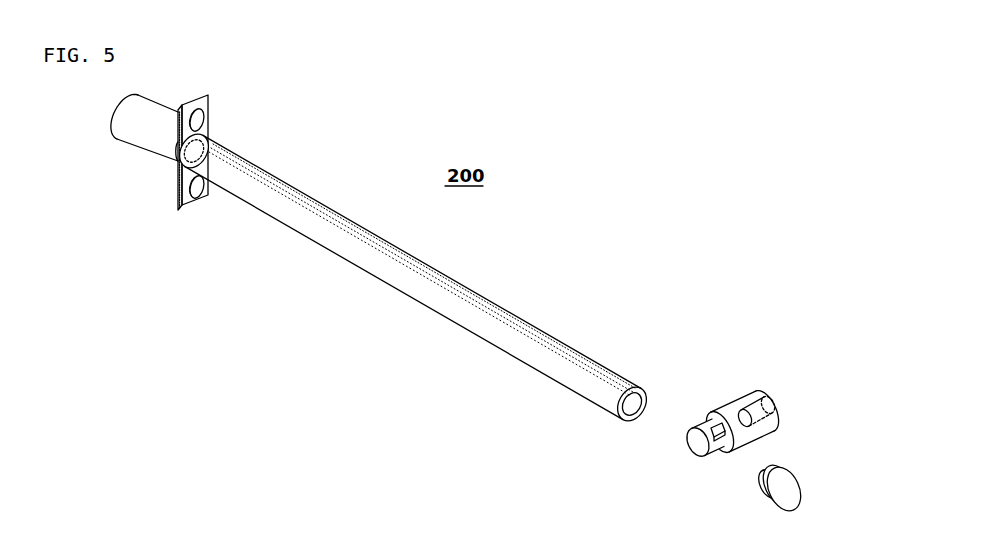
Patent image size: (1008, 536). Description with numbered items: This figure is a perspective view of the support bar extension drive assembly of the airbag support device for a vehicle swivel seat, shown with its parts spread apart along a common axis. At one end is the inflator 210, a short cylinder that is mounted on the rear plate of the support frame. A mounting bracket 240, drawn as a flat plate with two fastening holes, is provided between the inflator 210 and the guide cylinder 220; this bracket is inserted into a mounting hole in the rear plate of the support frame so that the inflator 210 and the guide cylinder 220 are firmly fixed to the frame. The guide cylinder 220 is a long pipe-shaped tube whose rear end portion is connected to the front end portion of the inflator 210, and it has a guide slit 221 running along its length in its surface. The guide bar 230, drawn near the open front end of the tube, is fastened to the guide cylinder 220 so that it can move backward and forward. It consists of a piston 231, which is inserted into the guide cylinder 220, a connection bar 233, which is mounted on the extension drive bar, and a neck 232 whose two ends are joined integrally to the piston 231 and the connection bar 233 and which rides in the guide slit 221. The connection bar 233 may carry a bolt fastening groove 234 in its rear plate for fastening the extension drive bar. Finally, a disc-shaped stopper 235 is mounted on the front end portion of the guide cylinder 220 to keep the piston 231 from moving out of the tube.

The inflator 210 is at (138, 133).
The guide cylinder 220 is at (381, 272).
The guide slit 221 is at (643, 396).
The guide bar 230 is at (748, 417).
The piston 231 is at (687, 448).
The neck 232 is at (713, 442).
The connection bar 233 is at (775, 417).
The bolt fastening groove 234 is at (774, 388).
The stopper 235 is at (793, 488).
The mounting bracket 240 is at (178, 207).